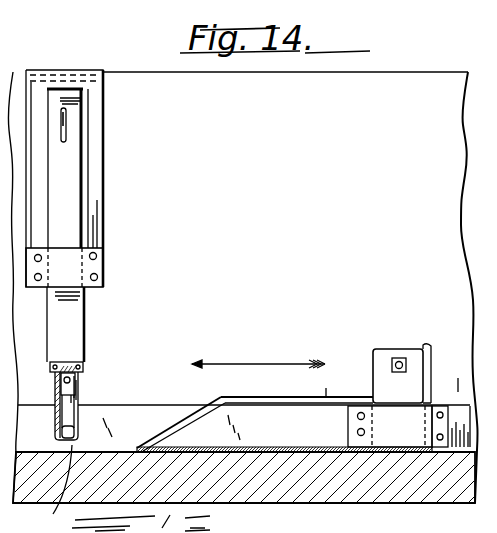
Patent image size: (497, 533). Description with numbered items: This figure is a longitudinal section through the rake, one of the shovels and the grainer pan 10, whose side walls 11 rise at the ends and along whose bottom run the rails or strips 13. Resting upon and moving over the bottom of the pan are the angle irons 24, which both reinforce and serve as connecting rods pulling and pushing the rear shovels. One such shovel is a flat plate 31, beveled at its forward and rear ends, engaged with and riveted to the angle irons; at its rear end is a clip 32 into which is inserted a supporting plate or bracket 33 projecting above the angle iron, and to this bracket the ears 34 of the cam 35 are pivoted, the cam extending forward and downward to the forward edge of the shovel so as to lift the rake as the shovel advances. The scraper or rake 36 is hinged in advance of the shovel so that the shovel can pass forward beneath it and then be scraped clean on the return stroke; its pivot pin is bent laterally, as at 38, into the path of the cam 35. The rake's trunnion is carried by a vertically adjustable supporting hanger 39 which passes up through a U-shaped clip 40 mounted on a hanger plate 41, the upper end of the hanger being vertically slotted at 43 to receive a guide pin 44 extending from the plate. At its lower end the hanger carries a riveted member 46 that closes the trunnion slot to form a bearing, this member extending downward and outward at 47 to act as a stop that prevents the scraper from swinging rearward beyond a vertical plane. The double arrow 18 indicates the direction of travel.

The grainer pan 10 is at (265, 492).
The side walls 11 is at (417, 88).
The rails or strips 13 is at (122, 450).
The travel direction 18 is at (329, 377).
The angle irons 24 is at (158, 411).
The flat plate 31 is at (258, 446).
The clip 32 is at (405, 423).
The supporting plate or bracket 33 is at (434, 350).
The ears 34 is at (388, 352).
The cam 35 is at (262, 397).
The scraper or rake 36 is at (62, 430).
The lateral extension of pivot pin 38 is at (45, 487).
The supporting hanger 39 is at (85, 319).
The U-shaped clip 40 is at (103, 273).
The hanger plate 41 is at (103, 182).
The vertical slot 43 is at (67, 135).
The guide pin 44 is at (66, 122).
The bearing member 46 is at (88, 368).
The stop 47 is at (68, 412).